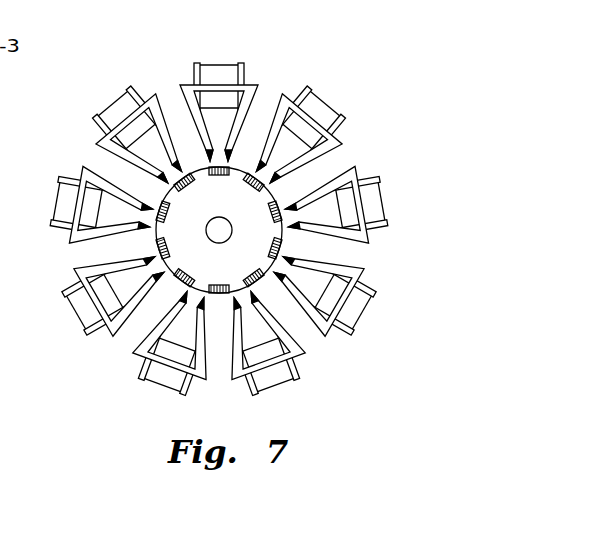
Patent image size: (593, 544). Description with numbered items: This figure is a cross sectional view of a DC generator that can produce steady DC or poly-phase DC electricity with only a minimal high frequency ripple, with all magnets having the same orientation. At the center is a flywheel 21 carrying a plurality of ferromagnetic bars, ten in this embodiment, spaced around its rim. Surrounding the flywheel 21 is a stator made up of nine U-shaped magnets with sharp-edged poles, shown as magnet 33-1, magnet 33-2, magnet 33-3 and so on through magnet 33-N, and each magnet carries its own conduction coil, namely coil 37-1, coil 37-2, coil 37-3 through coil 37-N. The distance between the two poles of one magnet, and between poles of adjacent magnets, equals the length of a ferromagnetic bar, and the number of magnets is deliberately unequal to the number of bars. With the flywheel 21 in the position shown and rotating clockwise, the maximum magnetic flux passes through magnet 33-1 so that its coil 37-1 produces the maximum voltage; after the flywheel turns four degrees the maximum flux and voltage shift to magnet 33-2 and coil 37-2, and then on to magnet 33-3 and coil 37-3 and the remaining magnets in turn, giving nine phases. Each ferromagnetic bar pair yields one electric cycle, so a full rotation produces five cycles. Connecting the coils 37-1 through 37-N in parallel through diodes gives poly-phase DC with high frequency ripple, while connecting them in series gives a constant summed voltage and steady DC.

The flywheel 21 is at (283, 223).
The magnet 33-1 is at (256, 87).
The magnet 33-2 is at (340, 135).
The magnet 33-3 is at (350, 167).
The magnet 33-N is at (100, 147).
The conduction coil 37-1 is at (208, 72).
The conduction coil 37-2 is at (313, 98).
The conduction coil 37-3 is at (382, 207).
The conduction coil 37-N is at (110, 113).